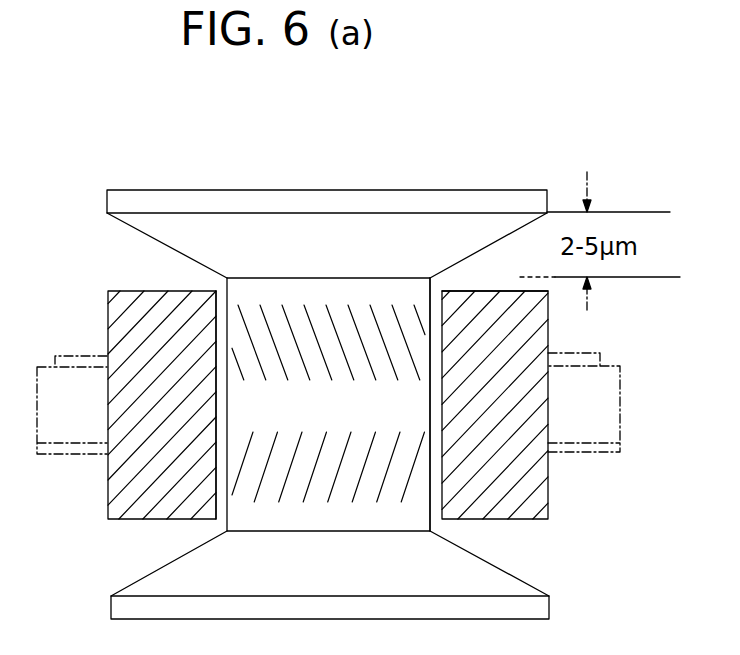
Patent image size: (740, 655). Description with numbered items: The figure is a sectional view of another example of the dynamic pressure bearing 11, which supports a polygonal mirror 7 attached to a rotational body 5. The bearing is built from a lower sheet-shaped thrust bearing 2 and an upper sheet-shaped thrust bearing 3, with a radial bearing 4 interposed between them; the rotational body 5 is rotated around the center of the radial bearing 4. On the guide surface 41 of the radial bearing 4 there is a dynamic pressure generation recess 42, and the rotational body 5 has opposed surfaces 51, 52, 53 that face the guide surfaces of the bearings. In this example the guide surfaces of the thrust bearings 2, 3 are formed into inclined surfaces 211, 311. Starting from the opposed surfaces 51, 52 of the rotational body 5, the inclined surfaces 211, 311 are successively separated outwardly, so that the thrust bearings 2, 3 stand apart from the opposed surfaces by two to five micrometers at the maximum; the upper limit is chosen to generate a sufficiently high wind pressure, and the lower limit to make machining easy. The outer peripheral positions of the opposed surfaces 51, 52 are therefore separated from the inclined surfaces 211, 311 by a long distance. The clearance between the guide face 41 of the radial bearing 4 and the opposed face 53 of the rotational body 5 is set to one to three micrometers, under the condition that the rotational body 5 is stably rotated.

The dynamic pressure bearing 11 is at (150, 170).
The thrust bearing 3 is at (437, 202).
The inclined surface 311 is at (168, 248).
The radial bearing 4 is at (305, 388).
The dynamic pressure generation recess 42 is at (332, 450).
The guide surface 41 is at (428, 405).
The rotational body 5 is at (543, 495).
The opposed surface 51 is at (152, 520).
The opposed surface 52 is at (498, 290).
The opposed surface 53 is at (216, 402).
The inclined surface 211 is at (510, 570).
The thrust bearing 2 is at (540, 606).
The polygonal mirror 7 is at (40, 372).